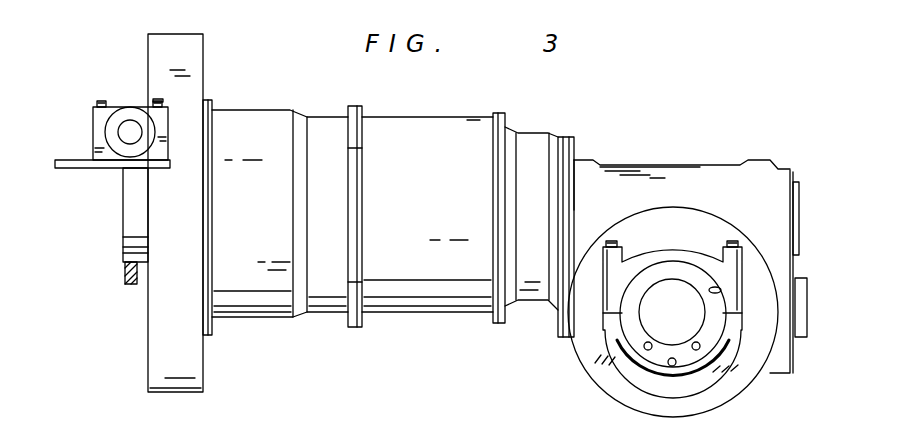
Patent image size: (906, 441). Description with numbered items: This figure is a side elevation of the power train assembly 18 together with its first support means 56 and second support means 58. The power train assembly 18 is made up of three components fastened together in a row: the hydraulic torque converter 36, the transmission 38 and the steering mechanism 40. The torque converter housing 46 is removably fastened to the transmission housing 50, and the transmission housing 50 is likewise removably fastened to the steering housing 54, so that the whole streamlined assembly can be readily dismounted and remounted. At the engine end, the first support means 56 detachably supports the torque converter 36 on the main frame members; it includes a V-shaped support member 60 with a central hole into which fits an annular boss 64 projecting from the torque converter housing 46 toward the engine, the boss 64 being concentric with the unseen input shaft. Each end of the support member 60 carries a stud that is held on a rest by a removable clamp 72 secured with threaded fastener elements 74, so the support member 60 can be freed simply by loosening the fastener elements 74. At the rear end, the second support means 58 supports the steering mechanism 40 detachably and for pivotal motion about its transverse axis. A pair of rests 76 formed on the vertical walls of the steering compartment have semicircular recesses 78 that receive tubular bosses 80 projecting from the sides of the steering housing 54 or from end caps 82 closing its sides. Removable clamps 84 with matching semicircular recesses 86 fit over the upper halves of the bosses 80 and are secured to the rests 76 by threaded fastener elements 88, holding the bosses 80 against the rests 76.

The power train assembly 18 is at (636, 117).
The hydraulic torque converter 36 is at (266, 110).
The transmission 38 is at (421, 116).
The steering mechanism 40 is at (718, 165).
The torque converter housing 46 is at (282, 318).
The transmission housing 50 is at (418, 313).
The steering housing 54 is at (773, 170).
The first support means 56 is at (86, 108).
The second support means 58 is at (617, 370).
The V-shaped support member 60 is at (125, 275).
The boss 64 is at (128, 222).
The clamp 72 is at (130, 107).
The threaded fastener elements 74 is at (160, 103).
The rests 76 is at (703, 363).
The semicircular recesses 78 is at (670, 366).
The bosses 80 is at (707, 325).
The end caps 82 is at (592, 342).
The clamps 84 is at (668, 250).
The semicircular recesses 86 is at (712, 292).
The threaded fastener elements 88 is at (611, 241).